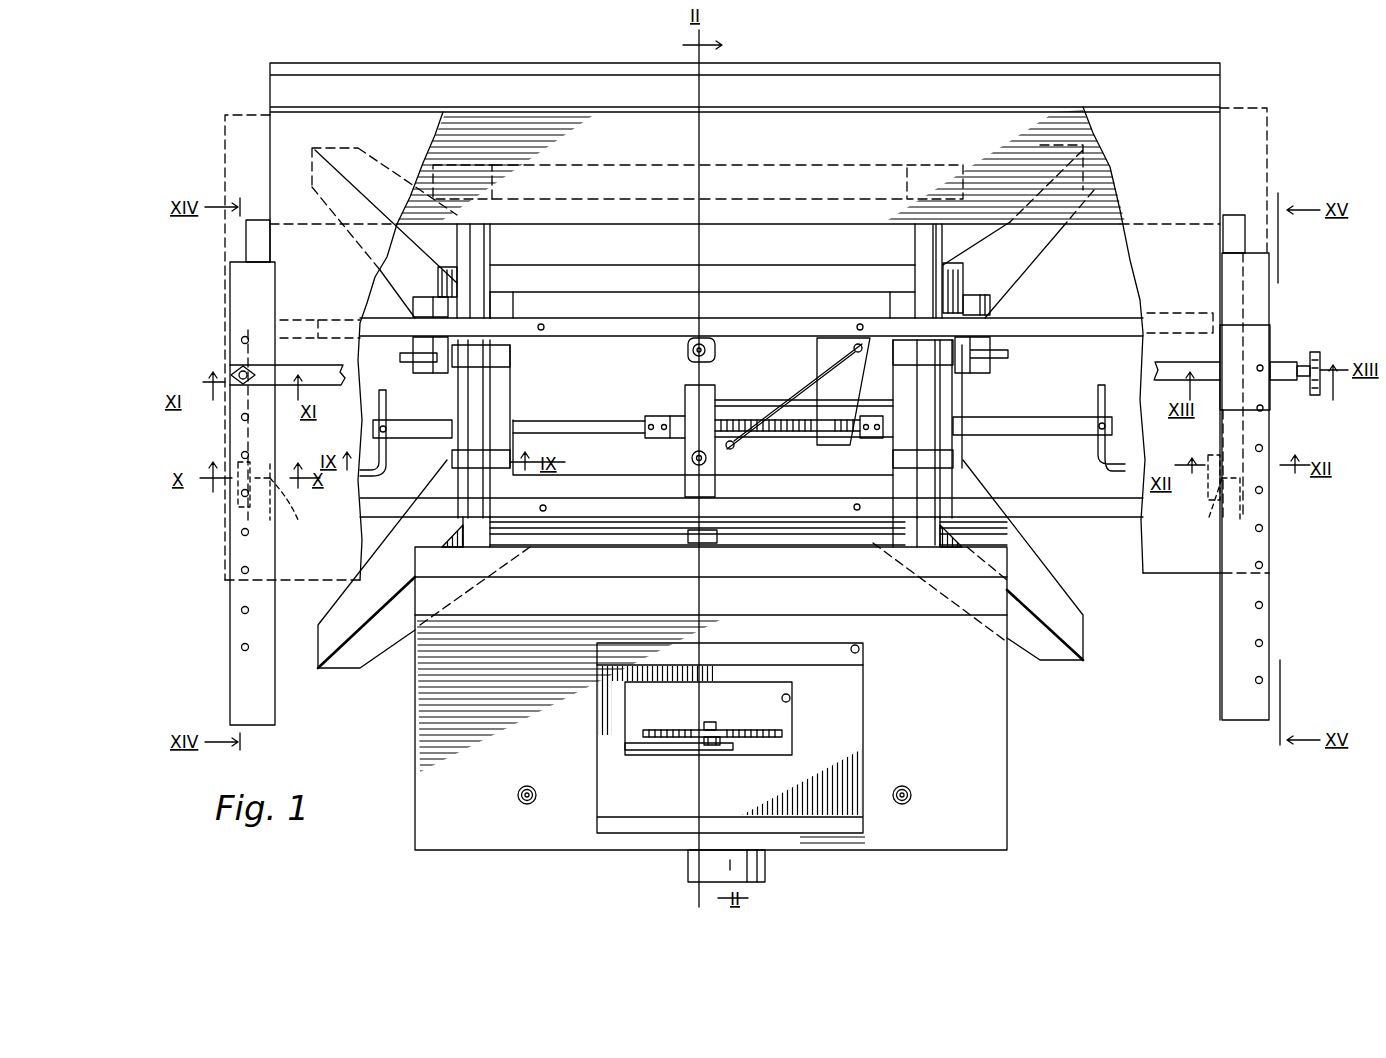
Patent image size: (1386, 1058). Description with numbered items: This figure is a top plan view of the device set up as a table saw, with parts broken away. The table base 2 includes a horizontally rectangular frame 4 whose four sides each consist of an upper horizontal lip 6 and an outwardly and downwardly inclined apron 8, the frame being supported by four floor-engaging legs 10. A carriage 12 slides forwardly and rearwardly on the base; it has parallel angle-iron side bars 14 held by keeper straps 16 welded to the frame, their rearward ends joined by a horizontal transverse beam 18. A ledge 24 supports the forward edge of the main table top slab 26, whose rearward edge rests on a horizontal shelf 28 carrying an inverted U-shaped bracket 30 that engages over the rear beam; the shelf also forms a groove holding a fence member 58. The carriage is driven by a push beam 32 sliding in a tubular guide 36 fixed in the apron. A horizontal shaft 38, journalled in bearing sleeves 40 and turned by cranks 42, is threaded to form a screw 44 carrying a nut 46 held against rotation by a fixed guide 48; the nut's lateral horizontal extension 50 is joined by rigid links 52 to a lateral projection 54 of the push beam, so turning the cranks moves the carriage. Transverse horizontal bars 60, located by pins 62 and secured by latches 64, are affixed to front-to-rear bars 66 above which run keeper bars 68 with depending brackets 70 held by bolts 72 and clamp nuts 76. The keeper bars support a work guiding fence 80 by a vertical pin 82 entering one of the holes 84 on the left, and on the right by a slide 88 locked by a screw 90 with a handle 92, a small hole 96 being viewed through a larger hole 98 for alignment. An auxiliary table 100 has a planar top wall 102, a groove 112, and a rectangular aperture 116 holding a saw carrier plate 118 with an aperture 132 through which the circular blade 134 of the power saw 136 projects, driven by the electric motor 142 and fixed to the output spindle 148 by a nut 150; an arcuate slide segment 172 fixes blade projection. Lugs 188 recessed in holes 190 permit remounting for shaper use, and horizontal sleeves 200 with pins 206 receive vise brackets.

The table base 2 is at (662, 260).
The horizontally rectangular frame 4 is at (791, 265).
The upper horizontal lip 6 is at (822, 300).
The apron 8 is at (756, 268).
The floor-engaging legs 10 is at (348, 668).
The carriage 12 is at (952, 242).
The angle-iron side bars 14 is at (480, 242).
The keeper straps 16 is at (500, 440).
The horizontal transverse beam 18 is at (937, 162).
The ledge 24 is at (998, 557).
The main table top slab 26 is at (1178, 573).
The horizontal shelf 28 is at (726, 216).
The bracket 30 is at (738, 162).
The push beam 32 is at (703, 544).
The tubular guide 36 is at (685, 391).
The horizontal shaft 38 is at (590, 424).
The bearing sleeves 40 is at (422, 416).
The cranks 42 is at (383, 396).
The screw 44 is at (668, 440).
The nut 46 is at (822, 438).
The fixed guide 48 is at (745, 400).
The lateral horizontal extension 50 is at (820, 352).
The rigid links 52 is at (794, 400).
The lateral projection 54 is at (735, 449).
The fence member 58 is at (493, 95).
The transverse horizontal bars 60 is at (1070, 328).
The pins 62 is at (546, 324).
The latches 64 is at (692, 350).
The forwardly and rearwardly extending horizontal bar 66 is at (250, 245).
The keeper bar 68 is at (235, 628).
The depending bracket 70 is at (252, 500).
The bolt 72 is at (275, 512).
The clamp nut 76 is at (240, 490).
The work guiding fence 80 is at (725, 389).
The vertical pin 82 is at (238, 372).
The holes 84 is at (240, 572).
The slide 88 is at (1270, 338).
The screw 90 is at (1303, 385).
The handle 92 is at (1318, 360).
The small hole 96 is at (1262, 680).
The larger hole 98 is at (1245, 368).
The auxiliary table 100 is at (1017, 800).
The planar top wall 102 is at (990, 752).
The groove 112 is at (860, 616).
The rectangular aperture 116 is at (862, 650).
The saw carrier plate 118 is at (858, 688).
The rectangular aperture 132 is at (790, 700).
The circular blade 134 is at (665, 730).
The power saw 136 is at (772, 874).
The electric motor 142 is at (688, 868).
The output spindle 148 is at (710, 722).
The nut 150 is at (722, 730).
The arcuate slide segment 172 is at (663, 750).
The lugs 188 is at (518, 797).
The hole 190 is at (527, 786).
The horizontal sleeve 200 is at (413, 310).
The pin 206 is at (412, 357).